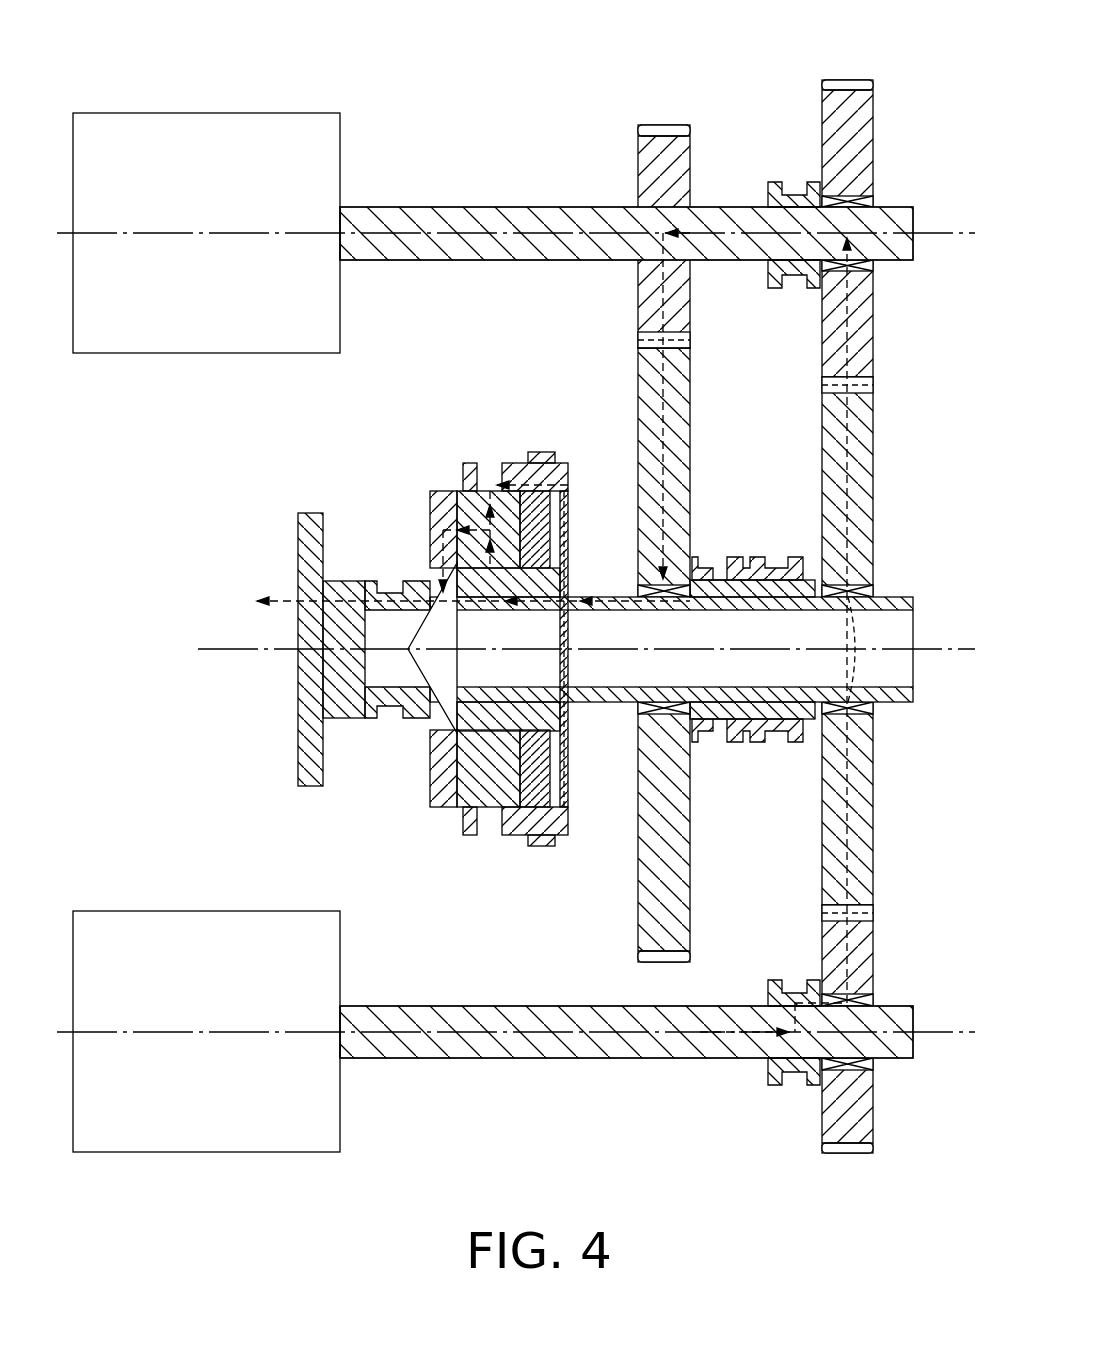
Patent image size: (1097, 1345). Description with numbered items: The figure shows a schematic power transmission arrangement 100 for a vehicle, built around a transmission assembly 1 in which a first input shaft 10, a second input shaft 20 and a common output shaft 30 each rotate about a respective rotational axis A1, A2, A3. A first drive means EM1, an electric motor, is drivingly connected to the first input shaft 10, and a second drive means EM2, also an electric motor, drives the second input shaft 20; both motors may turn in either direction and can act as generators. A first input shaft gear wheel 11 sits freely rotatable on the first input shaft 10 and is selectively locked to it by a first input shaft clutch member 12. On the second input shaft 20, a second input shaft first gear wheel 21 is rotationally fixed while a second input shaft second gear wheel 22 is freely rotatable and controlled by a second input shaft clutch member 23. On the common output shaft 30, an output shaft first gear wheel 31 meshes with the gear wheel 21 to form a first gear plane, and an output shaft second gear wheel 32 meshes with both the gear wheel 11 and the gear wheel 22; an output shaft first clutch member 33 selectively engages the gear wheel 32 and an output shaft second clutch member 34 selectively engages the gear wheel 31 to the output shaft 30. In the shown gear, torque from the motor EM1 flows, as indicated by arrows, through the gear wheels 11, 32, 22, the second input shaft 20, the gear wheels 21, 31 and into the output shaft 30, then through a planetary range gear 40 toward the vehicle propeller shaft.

The transmission assembly 1 is at (423, 48).
The power transmission arrangement 100 is at (492, 78).
The first input shaft 10 is at (490, 1006).
The first input shaft gear wheel 11 is at (875, 940).
The first input shaft clutch member 12 is at (793, 1085).
The second input shaft 20 is at (488, 206).
The second input shaft first gear wheel 21 is at (637, 160).
The second input shaft second gear wheel 22 is at (875, 131).
The second input shaft clutch member 23 is at (794, 193).
The common output shaft 30 is at (600, 596).
The output shaft first gear wheel 31 is at (637, 400).
The output shaft second gear wheel 32 is at (875, 478).
The output shaft first clutch member 33 is at (778, 565).
The output shaft second clutch member 34 is at (713, 566).
The range gear 40 is at (434, 491).
The rotational axis A1 is at (97, 1032).
The rotational axis A2 is at (97, 232).
The rotational axis A3 is at (222, 648).
The first drive means EM1 is at (211, 911).
The second drive means EM2 is at (210, 113).